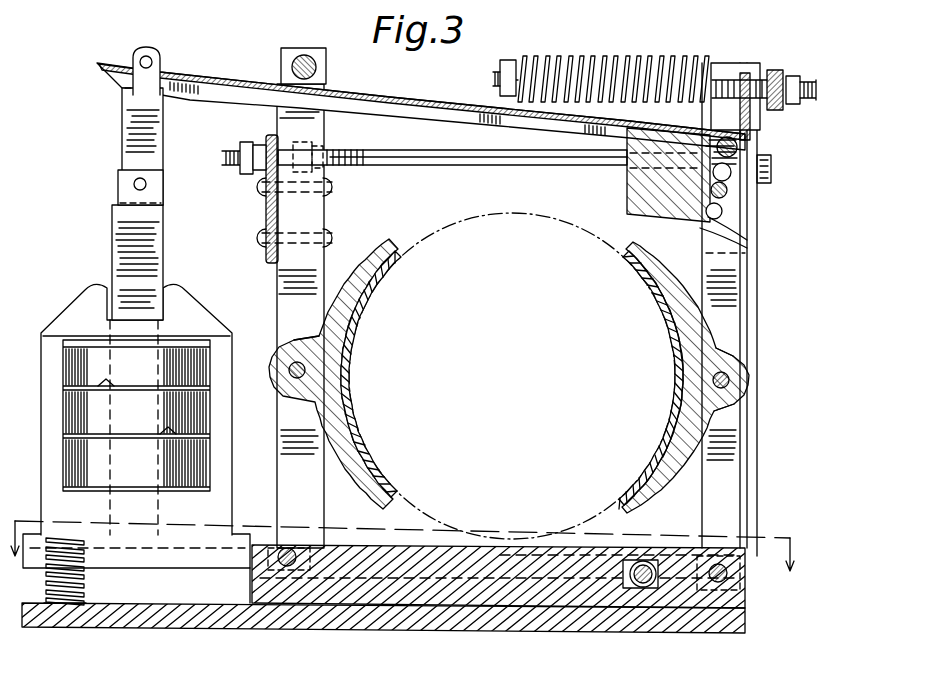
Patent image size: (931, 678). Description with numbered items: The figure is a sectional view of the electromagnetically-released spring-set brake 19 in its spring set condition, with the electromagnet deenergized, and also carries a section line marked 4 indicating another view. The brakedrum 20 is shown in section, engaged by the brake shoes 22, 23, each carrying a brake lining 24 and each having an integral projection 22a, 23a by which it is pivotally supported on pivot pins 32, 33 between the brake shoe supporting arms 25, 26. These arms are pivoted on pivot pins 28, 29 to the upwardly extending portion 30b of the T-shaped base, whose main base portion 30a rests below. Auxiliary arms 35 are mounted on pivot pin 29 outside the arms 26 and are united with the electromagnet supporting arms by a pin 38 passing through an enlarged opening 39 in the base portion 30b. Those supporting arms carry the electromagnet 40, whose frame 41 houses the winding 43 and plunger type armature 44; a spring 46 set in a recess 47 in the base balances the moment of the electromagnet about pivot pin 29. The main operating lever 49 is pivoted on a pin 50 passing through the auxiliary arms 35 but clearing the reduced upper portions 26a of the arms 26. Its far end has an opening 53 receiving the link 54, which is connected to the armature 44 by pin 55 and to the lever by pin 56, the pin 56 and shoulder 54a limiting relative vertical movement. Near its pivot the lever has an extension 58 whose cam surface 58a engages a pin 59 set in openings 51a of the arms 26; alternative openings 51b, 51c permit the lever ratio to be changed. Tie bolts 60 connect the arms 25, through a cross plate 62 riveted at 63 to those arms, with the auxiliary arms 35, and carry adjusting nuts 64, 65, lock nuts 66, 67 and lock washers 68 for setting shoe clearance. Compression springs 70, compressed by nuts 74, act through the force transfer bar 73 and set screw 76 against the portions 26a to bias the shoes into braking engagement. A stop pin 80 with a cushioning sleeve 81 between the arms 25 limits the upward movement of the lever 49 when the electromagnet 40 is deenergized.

The brake 19 is at (382, 598).
The brakedrum 20 is at (528, 212).
The brake shoe 22 is at (402, 244).
The integral projection 22a is at (284, 340).
The brake shoe 23 is at (643, 271).
The integral projection 23a is at (735, 358).
The brake lining 24 is at (398, 258).
The brake shoe supporting arms 25 is at (286, 281).
The brake shoe supporting arms 26 is at (738, 268).
The reduced cross section 26a is at (737, 70).
The pivot pin 28 is at (300, 548).
The pivot pin 29 is at (742, 585).
The main base portion 30a is at (265, 624).
The upwardly extending portion 30b is at (405, 545).
The pivot pin 32 is at (290, 373).
The pivot pin 33 is at (729, 380).
The auxiliary arms 35 is at (758, 292).
The pin 38 is at (648, 565).
The enlarged opening 39 is at (636, 562).
The electromagnet 40 is at (136, 409).
The frame 41 is at (229, 535).
The winding 43 is at (188, 378).
The plunger type armature 44 is at (120, 246).
The spring 46 is at (86, 583).
The recess 47 is at (52, 608).
The main operating lever 49 is at (414, 100).
The pin 50 is at (738, 150).
The openings 51a is at (723, 211).
The openings 51b is at (747, 235).
The openings 51c is at (732, 173).
The opening 53 is at (162, 80).
The link 54 is at (128, 134).
The shoulder 54a is at (122, 89).
The pin 55 is at (133, 184).
The pin 56 is at (147, 55).
The extension 58 is at (630, 180).
The cam surface 58a is at (746, 253).
The pin 59 is at (728, 190).
The tie bolts 60 is at (500, 160).
The cross plate 62 is at (266, 212).
The rivets 63 is at (334, 192).
The adjusting nut 64 is at (259, 170).
The adjusting nut 65 is at (300, 142).
The lock nut 66 is at (236, 165).
The lock nut 67 is at (321, 146).
The lock washers 68 is at (248, 144).
The compression springs 70 is at (545, 55).
The force transfer bar 73 is at (775, 70).
The nuts 74 is at (507, 58).
The set screw 76 is at (798, 78).
The pin 80 is at (305, 56).
The sleeve 81 is at (284, 60).
The section line 4- 4 is at (403, 528).